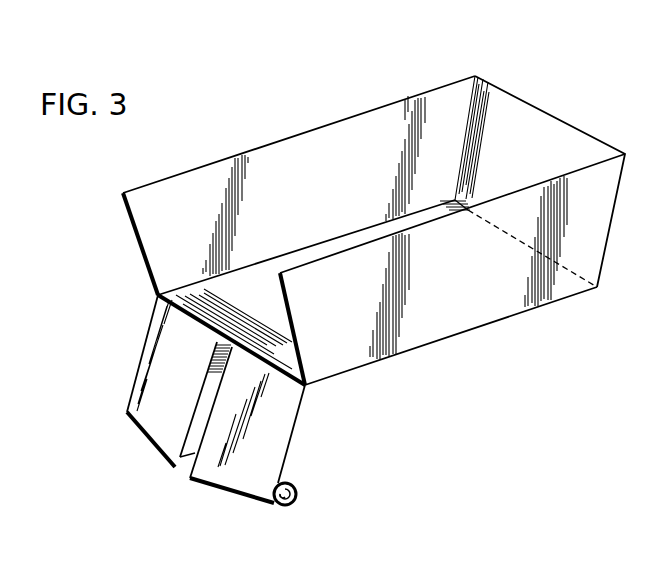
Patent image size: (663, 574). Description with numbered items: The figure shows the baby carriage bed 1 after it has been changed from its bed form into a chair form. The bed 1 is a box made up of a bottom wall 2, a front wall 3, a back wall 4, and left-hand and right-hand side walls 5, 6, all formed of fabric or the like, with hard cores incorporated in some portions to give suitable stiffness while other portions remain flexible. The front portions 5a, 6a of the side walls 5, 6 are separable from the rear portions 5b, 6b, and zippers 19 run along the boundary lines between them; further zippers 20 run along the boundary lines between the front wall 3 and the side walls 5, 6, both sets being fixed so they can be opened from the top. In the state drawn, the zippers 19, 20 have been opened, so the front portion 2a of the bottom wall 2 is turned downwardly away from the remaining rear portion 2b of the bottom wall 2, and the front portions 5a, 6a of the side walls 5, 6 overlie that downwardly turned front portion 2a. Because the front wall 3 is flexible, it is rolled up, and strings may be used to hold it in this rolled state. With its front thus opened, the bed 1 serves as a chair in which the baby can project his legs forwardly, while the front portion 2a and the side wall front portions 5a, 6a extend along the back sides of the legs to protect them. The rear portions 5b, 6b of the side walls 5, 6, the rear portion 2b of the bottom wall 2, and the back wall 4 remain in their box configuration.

The baby carriage bed 1 is at (477, 61).
The bottom wall 2 is at (251, 288).
The front portion of the bottom wall 2a is at (193, 433).
The side wall portion 2b is at (383, 230).
The front wall 3 is at (297, 503).
The back wall 4 is at (542, 123).
The left-hand side wall 5 is at (303, 168).
The front portion of the left-hand side wall 5a is at (147, 377).
The rear portion of the left-hand side wall 5b is at (428, 98).
The right-hand side wall 6 is at (416, 326).
The front portion of the right-hand side wall 6a is at (333, 462).
The rear portion of the right-hand side wall 6b is at (495, 298).
The zippers 19 is at (170, 312).
The zippers 20 is at (133, 418).